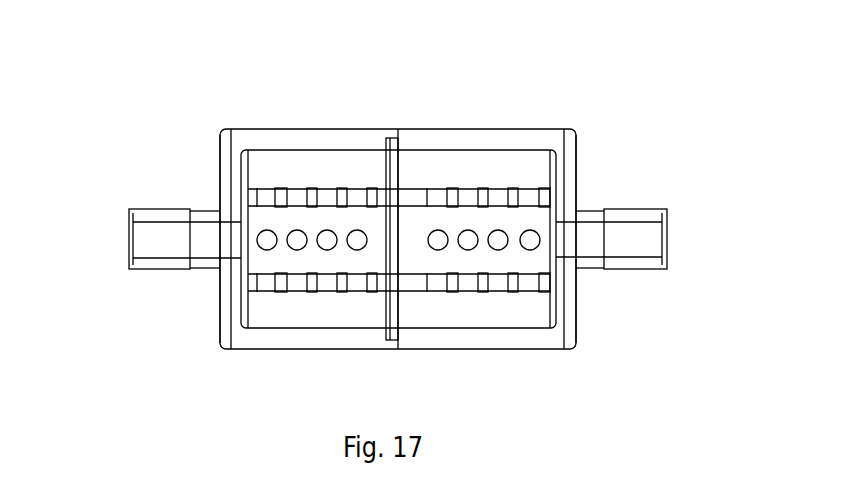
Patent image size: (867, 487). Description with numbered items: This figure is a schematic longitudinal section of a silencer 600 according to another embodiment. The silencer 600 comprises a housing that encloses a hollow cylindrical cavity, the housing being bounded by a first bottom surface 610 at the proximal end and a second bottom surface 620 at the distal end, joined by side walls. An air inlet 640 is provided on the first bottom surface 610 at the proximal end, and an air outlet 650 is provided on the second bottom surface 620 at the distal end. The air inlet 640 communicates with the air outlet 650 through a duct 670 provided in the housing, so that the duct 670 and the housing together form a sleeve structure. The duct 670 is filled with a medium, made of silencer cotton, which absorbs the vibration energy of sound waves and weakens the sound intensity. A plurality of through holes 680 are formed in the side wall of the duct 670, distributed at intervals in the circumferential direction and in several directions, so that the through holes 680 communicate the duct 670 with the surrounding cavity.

The silencer 600 is at (667, 42).
The first bottom surface 610 is at (220, 167).
The second bottom surface 620 is at (575, 167).
The air inlet 640 is at (125, 238).
The air outlet 650 is at (670, 230).
The duct 670 is at (327, 217).
The through holes 680 is at (437, 275).